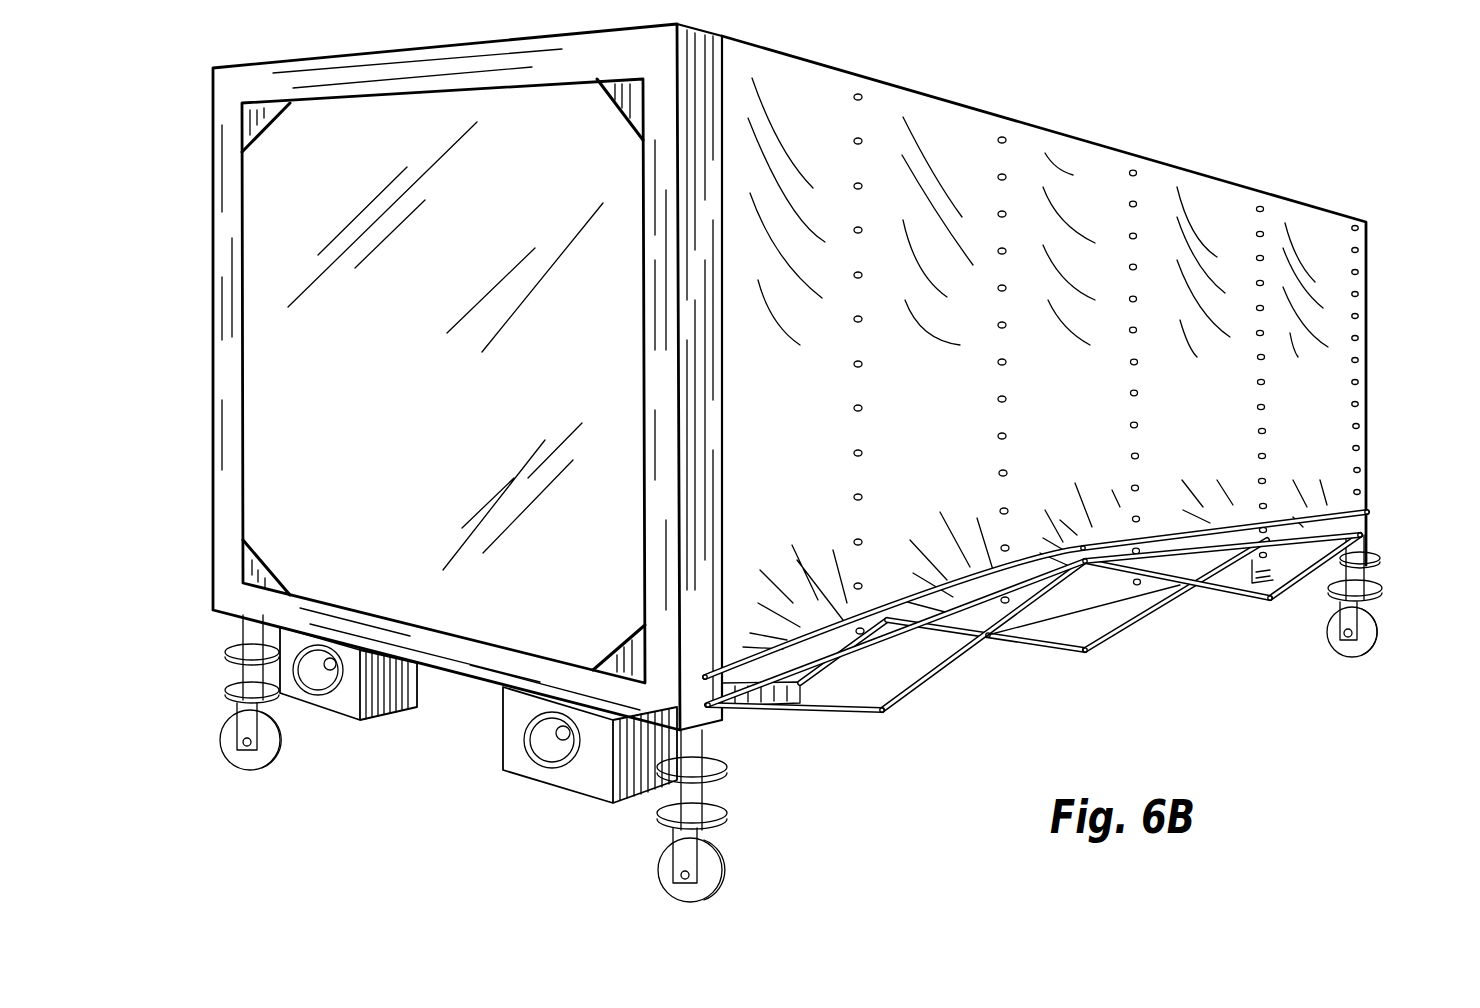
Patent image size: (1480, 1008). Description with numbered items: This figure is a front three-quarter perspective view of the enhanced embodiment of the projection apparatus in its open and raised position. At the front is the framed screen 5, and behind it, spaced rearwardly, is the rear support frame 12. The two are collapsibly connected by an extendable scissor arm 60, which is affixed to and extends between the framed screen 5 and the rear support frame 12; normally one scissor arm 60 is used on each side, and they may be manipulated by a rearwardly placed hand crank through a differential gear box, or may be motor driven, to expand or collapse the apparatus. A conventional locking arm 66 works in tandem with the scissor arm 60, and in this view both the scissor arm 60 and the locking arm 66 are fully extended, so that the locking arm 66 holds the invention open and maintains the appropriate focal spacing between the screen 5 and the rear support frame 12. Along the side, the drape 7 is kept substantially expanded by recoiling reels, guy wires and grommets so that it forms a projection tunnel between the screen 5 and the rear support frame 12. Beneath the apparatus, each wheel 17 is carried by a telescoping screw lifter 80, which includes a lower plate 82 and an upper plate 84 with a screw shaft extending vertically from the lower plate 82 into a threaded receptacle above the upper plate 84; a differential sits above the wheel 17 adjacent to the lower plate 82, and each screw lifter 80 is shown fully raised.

The framed screen 5 is at (337, 455).
The drape 7 is at (1055, 202).
The rear support frame 12 is at (1367, 288).
The wheel 17 is at (283, 752).
The scissor arm 60 is at (1067, 652).
The locking arm 66 is at (955, 585).
The screw lifter 80 is at (801, 681).
The lower plate 82 is at (1383, 587).
The upper plate 84 is at (1380, 563).